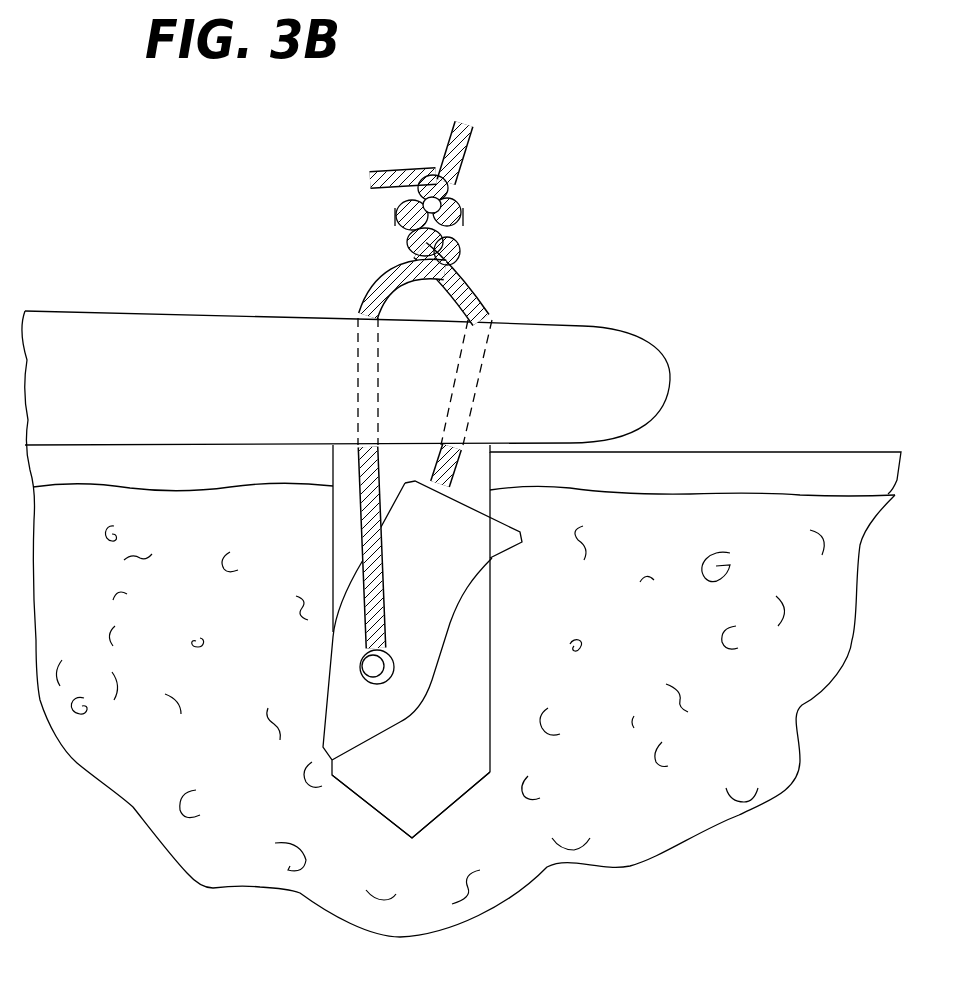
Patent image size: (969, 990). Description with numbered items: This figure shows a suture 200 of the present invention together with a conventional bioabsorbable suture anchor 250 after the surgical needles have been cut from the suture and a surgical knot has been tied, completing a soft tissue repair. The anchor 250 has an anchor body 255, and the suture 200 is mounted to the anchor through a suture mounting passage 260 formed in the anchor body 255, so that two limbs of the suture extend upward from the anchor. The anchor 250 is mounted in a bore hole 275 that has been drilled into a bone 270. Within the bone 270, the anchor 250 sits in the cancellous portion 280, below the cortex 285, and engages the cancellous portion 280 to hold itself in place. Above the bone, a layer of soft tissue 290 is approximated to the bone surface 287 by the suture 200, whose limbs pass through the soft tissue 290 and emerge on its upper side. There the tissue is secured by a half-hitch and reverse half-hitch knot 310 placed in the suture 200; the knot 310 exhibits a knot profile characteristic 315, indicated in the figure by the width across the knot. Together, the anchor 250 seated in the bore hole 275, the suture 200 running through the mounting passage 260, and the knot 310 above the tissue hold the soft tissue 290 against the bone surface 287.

The suture 200 is at (468, 152).
The half-hitch and reverse half-hitch knot 310 is at (472, 178).
The knot profile characteristic 315 is at (392, 217).
The cancellous portion 280 is at (125, 458).
The cortex 285 is at (208, 528).
The soft tissue 290 is at (293, 345).
The bone surface 287 is at (637, 445).
The bone 270 is at (804, 452).
The suture anchor 250 is at (507, 521).
The anchor body 255 is at (448, 558).
The suture mounting passage 260 is at (360, 676).
The bore hole 275 is at (463, 747).